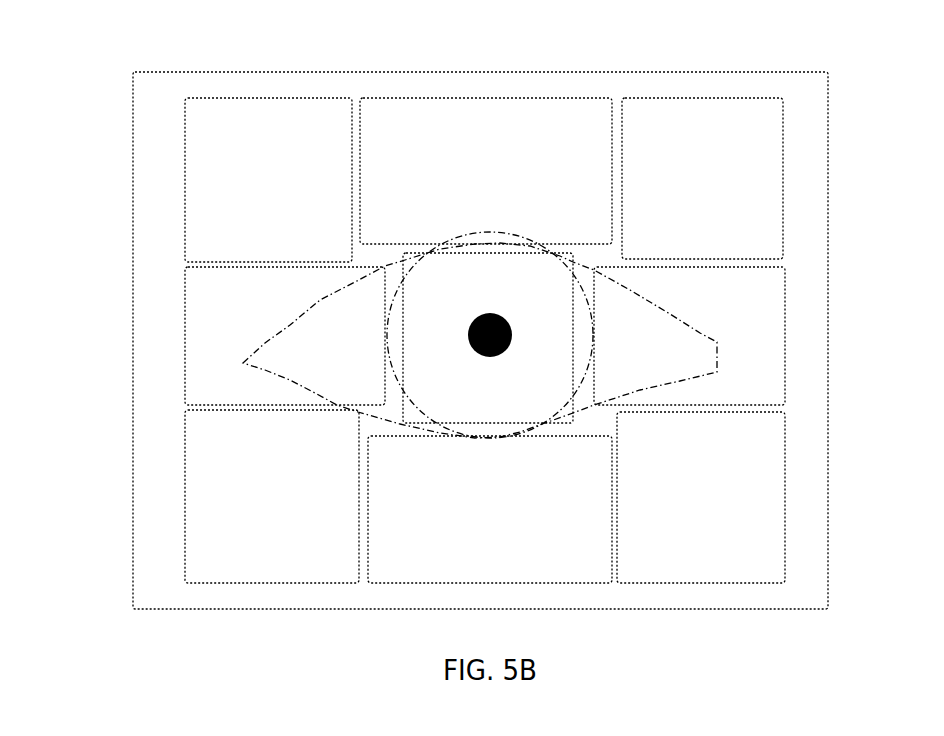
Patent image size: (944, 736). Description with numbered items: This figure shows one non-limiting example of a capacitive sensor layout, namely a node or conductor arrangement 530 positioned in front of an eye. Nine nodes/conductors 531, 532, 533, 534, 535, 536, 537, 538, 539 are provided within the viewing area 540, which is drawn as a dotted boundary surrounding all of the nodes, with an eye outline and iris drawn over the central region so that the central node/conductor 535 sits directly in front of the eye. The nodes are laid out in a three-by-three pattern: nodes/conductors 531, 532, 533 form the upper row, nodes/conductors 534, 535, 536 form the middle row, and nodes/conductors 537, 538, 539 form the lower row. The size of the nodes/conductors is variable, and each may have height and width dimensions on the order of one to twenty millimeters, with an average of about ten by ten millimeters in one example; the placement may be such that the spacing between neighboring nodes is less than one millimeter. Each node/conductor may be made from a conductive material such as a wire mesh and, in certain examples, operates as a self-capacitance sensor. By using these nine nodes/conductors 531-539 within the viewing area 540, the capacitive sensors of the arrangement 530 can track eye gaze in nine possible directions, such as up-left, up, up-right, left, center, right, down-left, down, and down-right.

The node or conductor arrangement 530 is at (785, 25).
The node/conductor 531 is at (249, 190).
The node/conductor 532 is at (467, 181).
The node/conductor 533 is at (683, 190).
The node/conductor 534 is at (219, 306).
The node/conductor 535 is at (435, 300).
The node/conductor 536 is at (714, 310).
The node/conductor 537 is at (253, 506).
The node/conductor 538 is at (471, 520).
The node/conductor 539 is at (681, 508).
The viewing area 540 is at (133, 453).